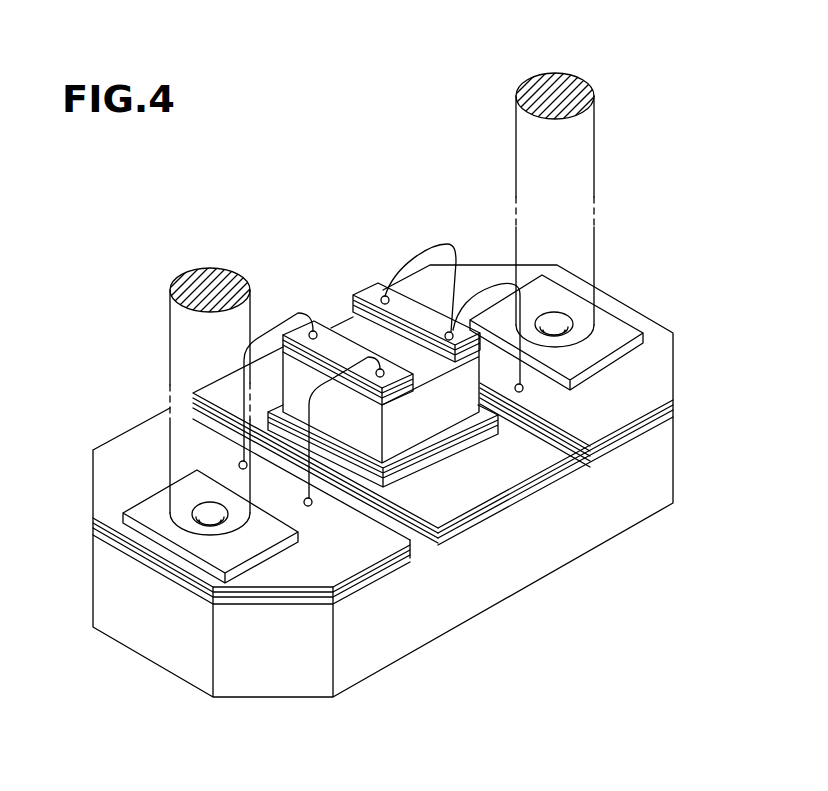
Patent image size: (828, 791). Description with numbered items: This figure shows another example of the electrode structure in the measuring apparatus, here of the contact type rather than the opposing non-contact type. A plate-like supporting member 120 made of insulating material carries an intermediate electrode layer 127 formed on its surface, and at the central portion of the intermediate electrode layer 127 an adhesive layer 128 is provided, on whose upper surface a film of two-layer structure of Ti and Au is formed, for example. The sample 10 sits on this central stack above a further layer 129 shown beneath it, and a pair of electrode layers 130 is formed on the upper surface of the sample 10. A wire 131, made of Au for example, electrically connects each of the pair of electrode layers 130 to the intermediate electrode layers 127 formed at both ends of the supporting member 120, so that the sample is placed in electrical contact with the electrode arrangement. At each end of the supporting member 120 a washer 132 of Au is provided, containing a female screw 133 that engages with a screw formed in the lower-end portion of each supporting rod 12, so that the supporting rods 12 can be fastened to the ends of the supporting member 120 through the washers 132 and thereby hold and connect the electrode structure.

The sample 10 is at (457, 410).
The supporting rod 12 is at (177, 343).
The supporting member 120 is at (562, 556).
The intermediate electrode layer 127 is at (110, 467).
The adhesive layer 128 is at (347, 465).
The bonding layer 129 is at (413, 455).
The electrode layer 130 is at (322, 330).
The wire 131 is at (275, 335).
The washer 132 is at (143, 511).
The female screw 133 is at (204, 503).